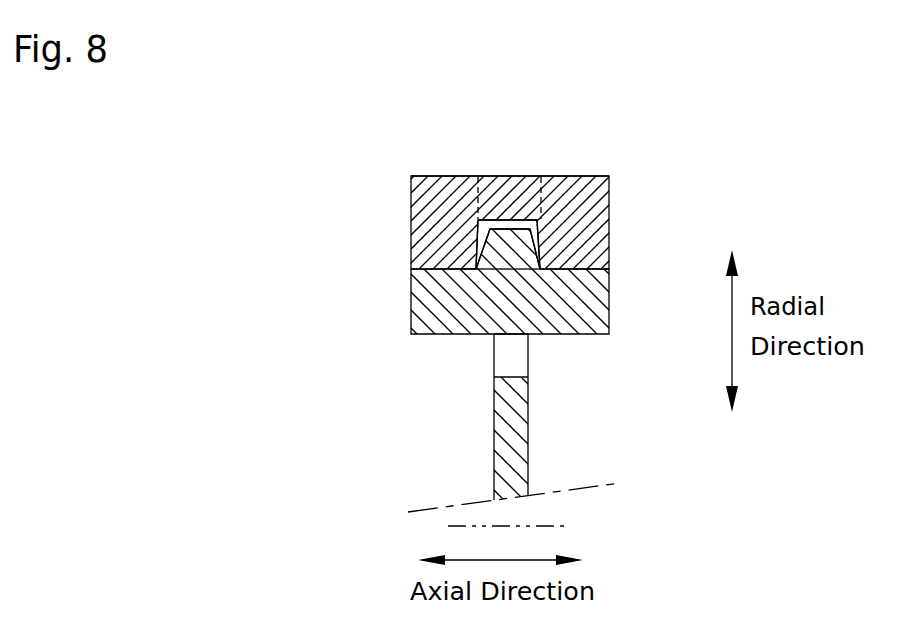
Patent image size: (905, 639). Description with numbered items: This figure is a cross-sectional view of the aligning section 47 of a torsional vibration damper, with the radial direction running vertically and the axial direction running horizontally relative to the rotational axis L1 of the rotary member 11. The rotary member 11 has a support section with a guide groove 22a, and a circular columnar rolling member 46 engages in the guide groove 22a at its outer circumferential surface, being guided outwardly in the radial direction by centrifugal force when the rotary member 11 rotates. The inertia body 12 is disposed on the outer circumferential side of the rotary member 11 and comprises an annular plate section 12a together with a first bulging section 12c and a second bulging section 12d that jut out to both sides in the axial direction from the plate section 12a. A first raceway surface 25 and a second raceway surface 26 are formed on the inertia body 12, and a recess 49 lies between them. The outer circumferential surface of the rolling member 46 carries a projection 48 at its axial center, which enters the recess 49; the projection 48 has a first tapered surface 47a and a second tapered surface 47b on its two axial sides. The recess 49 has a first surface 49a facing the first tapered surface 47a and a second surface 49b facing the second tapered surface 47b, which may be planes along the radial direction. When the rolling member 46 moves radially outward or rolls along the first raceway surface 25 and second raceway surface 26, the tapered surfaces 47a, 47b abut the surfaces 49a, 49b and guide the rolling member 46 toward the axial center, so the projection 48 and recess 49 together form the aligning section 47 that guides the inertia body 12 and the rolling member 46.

The rotary member 11 is at (541, 431).
The inertia body 12 is at (612, 178).
The plate section 12a is at (496, 190).
The first bulging section 12c is at (420, 192).
The second bulging section 12d is at (602, 184).
The guide groove 22a is at (514, 362).
The first raceway surface 25 is at (420, 273).
The second raceway surface 26 is at (612, 289).
The rolling member 46 is at (598, 308).
The aligning section 47 is at (474, 210).
The first tapered surface 47a is at (477, 221).
The second tapered surface 47b is at (548, 221).
The projection 48 is at (541, 219).
The recess 49 is at (512, 218).
The first surface 49a is at (478, 247).
The second surface 49b is at (548, 250).
The rotational axis L1 is at (565, 522).